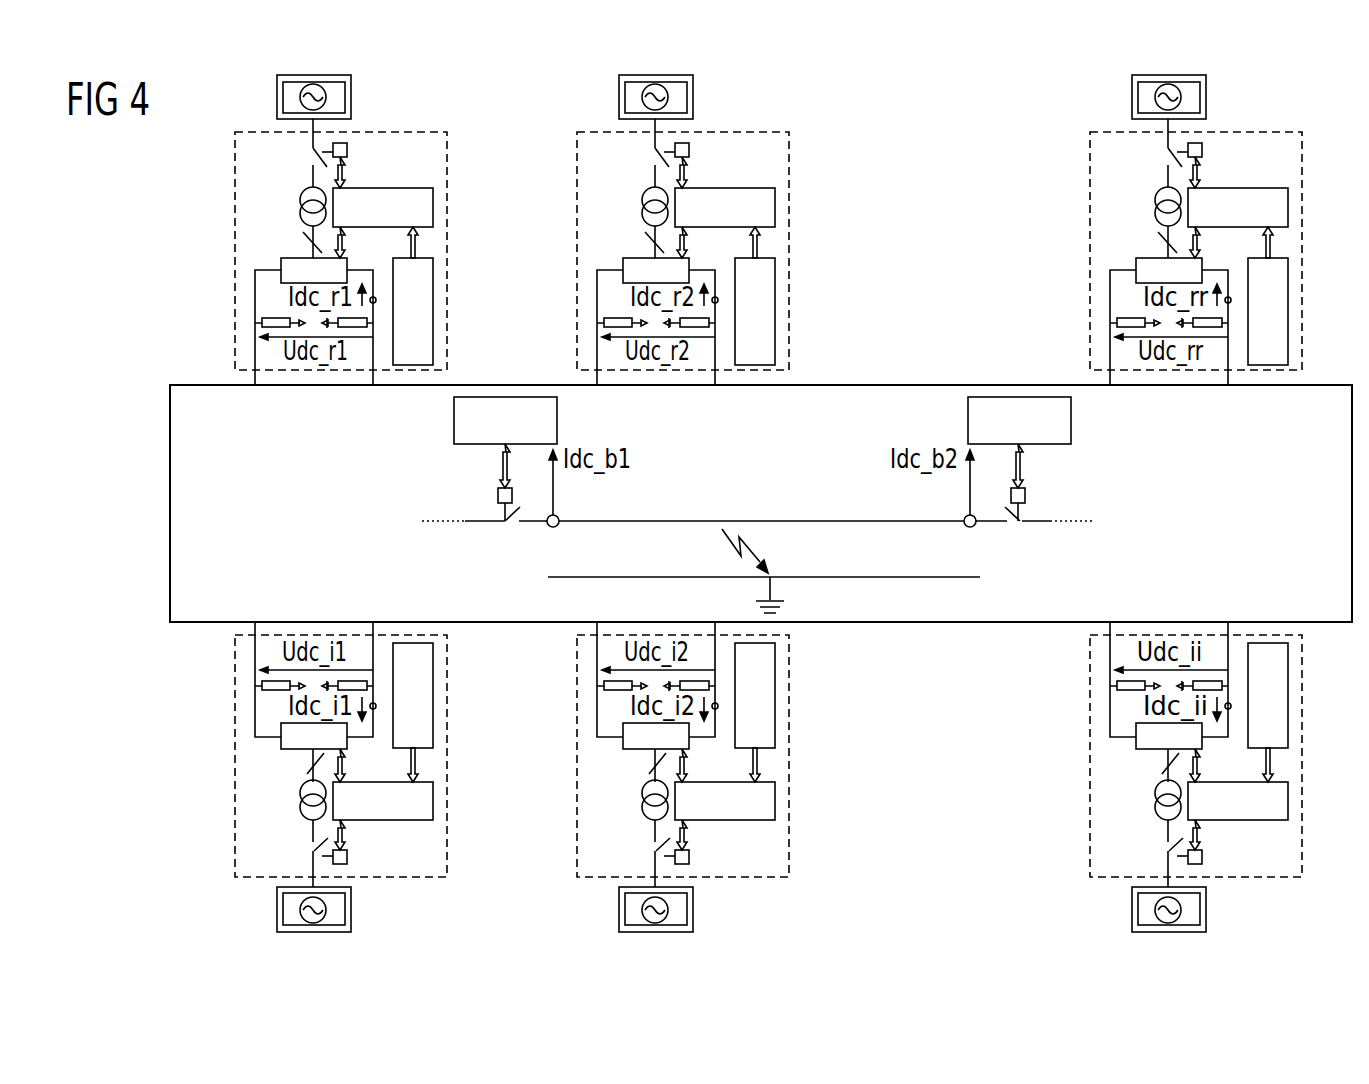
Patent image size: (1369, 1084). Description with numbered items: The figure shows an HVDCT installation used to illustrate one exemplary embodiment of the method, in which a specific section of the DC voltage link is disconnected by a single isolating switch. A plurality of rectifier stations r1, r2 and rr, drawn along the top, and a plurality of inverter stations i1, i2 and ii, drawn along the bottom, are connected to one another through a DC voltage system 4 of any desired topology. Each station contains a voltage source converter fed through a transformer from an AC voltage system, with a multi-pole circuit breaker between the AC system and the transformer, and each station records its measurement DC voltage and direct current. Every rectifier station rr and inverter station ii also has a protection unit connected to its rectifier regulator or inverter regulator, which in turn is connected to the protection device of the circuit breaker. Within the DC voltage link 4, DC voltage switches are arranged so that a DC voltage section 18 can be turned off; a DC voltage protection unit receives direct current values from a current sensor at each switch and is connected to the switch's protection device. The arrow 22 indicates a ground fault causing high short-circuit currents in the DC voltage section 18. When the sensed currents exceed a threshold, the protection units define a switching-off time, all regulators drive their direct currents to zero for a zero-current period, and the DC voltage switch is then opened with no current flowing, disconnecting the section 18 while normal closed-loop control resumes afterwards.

The DC voltage system 4 is at (915, 385).
The DC voltage section 18 is at (714, 521).
The arrow 22 is at (722, 532).
The rectifier station r1 is at (447, 158).
The rectifier station r2 is at (711, 250).
The rectifier station rr is at (1224, 250).
The inverter station i1 is at (447, 855).
The inverter station i2 is at (709, 756).
The inverter station ii is at (1222, 756).